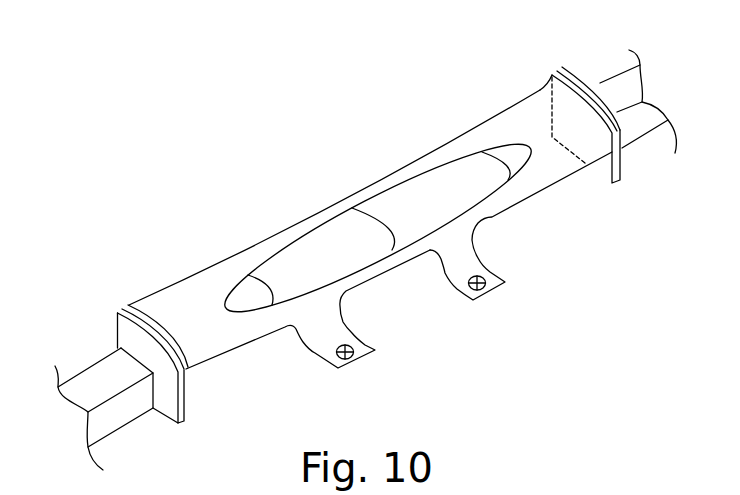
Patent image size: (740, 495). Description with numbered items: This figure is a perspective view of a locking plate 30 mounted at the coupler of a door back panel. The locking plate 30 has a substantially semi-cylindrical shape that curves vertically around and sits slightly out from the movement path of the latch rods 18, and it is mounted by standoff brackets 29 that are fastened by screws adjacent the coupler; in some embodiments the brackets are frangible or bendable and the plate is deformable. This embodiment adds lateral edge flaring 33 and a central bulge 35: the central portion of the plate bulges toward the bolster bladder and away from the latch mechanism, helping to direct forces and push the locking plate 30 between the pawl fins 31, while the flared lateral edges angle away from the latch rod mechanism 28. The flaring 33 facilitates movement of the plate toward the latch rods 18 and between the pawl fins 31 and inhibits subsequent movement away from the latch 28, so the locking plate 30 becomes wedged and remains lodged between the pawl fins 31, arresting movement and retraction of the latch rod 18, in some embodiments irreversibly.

The latch rod 18 is at (637, 128).
The latch rod mechanism 28 is at (329, 235).
The standoff bracket 29 is at (325, 333).
The locking plate 30 is at (370, 241).
The pawl fin 31 is at (120, 312).
The lateral edge flaring 33 is at (137, 298).
The central bulge 35 is at (320, 245).